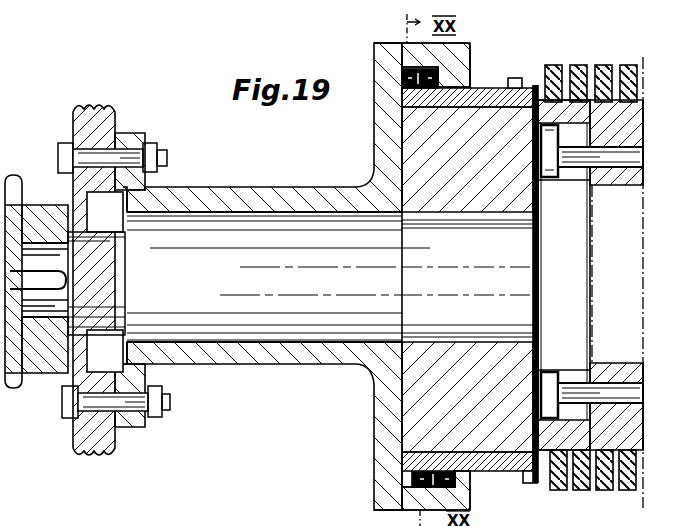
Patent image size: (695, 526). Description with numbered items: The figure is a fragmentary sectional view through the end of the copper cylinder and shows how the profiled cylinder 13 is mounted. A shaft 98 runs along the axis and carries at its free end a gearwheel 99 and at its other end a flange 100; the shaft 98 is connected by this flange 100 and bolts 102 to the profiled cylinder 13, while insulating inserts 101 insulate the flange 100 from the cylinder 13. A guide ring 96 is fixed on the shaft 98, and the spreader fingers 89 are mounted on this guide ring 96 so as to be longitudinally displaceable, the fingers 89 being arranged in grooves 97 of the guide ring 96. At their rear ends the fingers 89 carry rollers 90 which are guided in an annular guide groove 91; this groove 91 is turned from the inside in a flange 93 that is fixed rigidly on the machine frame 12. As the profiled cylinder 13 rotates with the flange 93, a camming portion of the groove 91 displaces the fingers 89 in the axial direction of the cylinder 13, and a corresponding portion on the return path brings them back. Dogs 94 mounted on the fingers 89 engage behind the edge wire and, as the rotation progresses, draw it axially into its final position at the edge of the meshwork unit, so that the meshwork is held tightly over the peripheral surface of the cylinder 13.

The machine frame 12 is at (98, 108).
The profiled cylinder 13 is at (623, 117).
The spreader fingers 89 is at (493, 88).
The rollers 90 is at (470, 60).
The annular guide groove 91 is at (400, 78).
The flange 93 is at (378, 56).
The dogs 94 is at (517, 78).
The guide ring 96 is at (407, 173).
The grooves 97 is at (528, 92).
The shaft 98 is at (283, 322).
The gearwheel 99 is at (17, 192).
The flange 100 is at (558, 298).
The insulating inserts 101 is at (573, 190).
The bolts 102 is at (548, 380).